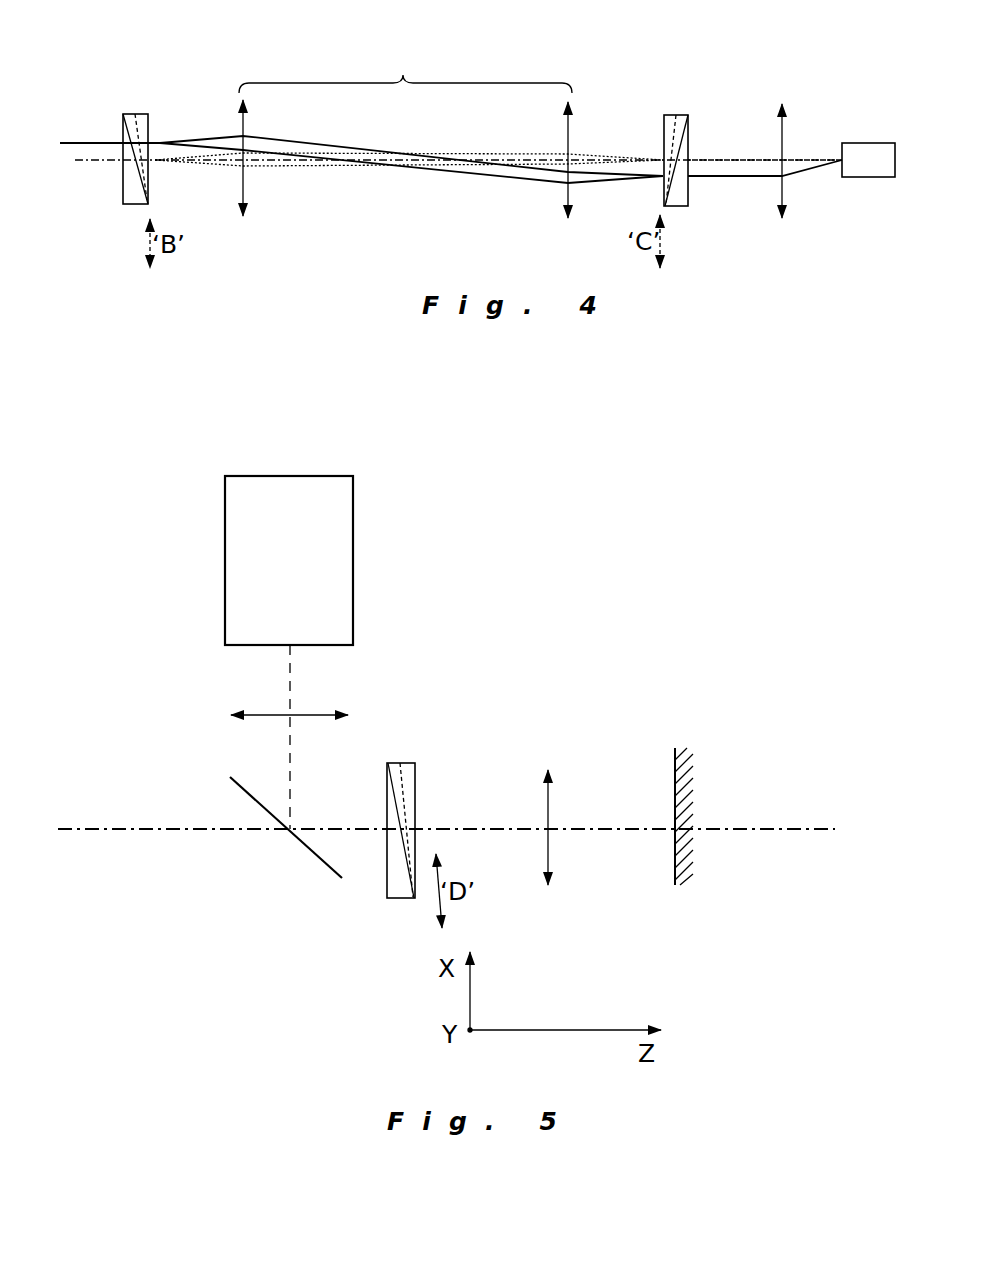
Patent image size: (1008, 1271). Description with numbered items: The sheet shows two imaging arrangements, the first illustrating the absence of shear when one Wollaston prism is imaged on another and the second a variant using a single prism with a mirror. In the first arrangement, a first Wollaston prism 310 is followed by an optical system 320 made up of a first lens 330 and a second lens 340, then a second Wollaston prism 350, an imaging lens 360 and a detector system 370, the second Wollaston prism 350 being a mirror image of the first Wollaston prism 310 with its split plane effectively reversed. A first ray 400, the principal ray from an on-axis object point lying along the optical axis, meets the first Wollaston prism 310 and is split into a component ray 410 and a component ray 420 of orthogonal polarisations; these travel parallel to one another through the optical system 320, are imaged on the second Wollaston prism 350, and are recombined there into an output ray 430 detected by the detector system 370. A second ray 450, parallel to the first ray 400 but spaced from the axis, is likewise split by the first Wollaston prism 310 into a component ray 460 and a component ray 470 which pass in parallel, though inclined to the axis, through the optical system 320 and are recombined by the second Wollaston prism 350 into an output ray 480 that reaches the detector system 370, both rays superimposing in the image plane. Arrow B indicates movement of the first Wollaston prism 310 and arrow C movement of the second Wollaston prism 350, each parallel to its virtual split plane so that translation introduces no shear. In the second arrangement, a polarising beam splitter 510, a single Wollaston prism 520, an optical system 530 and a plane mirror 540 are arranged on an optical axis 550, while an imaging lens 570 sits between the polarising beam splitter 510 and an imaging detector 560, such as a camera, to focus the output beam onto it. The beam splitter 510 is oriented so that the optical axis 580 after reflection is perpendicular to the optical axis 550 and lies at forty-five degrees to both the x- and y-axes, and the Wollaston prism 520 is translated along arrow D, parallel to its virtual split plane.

In FIG. 4, the first Wollaston prism 310 is at (143, 113).
In FIG. 4, the optical system 320 is at (405, 69).
In FIG. 4, the first lens 330 is at (245, 183).
In FIG. 4, the second lens 340 is at (563, 203).
In FIG. 4, the second Wollaston prism 350 is at (683, 115).
In FIG. 4, the imaging lens 360 is at (783, 132).
In FIG. 4, the detector system 370 is at (868, 170).
In FIG. 4, the first ray 400 is at (112, 162).
In FIG. 4, the component ray 410 is at (213, 157).
In FIG. 4, the component ray 420 is at (230, 167).
In FIG. 4, the output ray 430 is at (705, 158).
In FIG. 4, the second ray 450 is at (97, 140).
In FIG. 4, the component ray 460 is at (272, 138).
In FIG. 4, the component ray 470 is at (495, 177).
In FIG. 4, the output ray 480 is at (755, 177).
In FIG. 5, the polarising beam splitter 510 is at (305, 850).
In FIG. 5, the Wollaston prism 520 is at (407, 762).
In FIG. 5, the optical system 530 is at (548, 792).
In FIG. 5, the plane mirror 540 is at (695, 770).
In FIG. 5, the optical axis 550 is at (143, 832).
In FIG. 5, the imaging detector 560 is at (289, 560).
In FIG. 5, the imaging lens 570 is at (250, 710).
In FIG. 5, the optical axis 580 is at (292, 767).